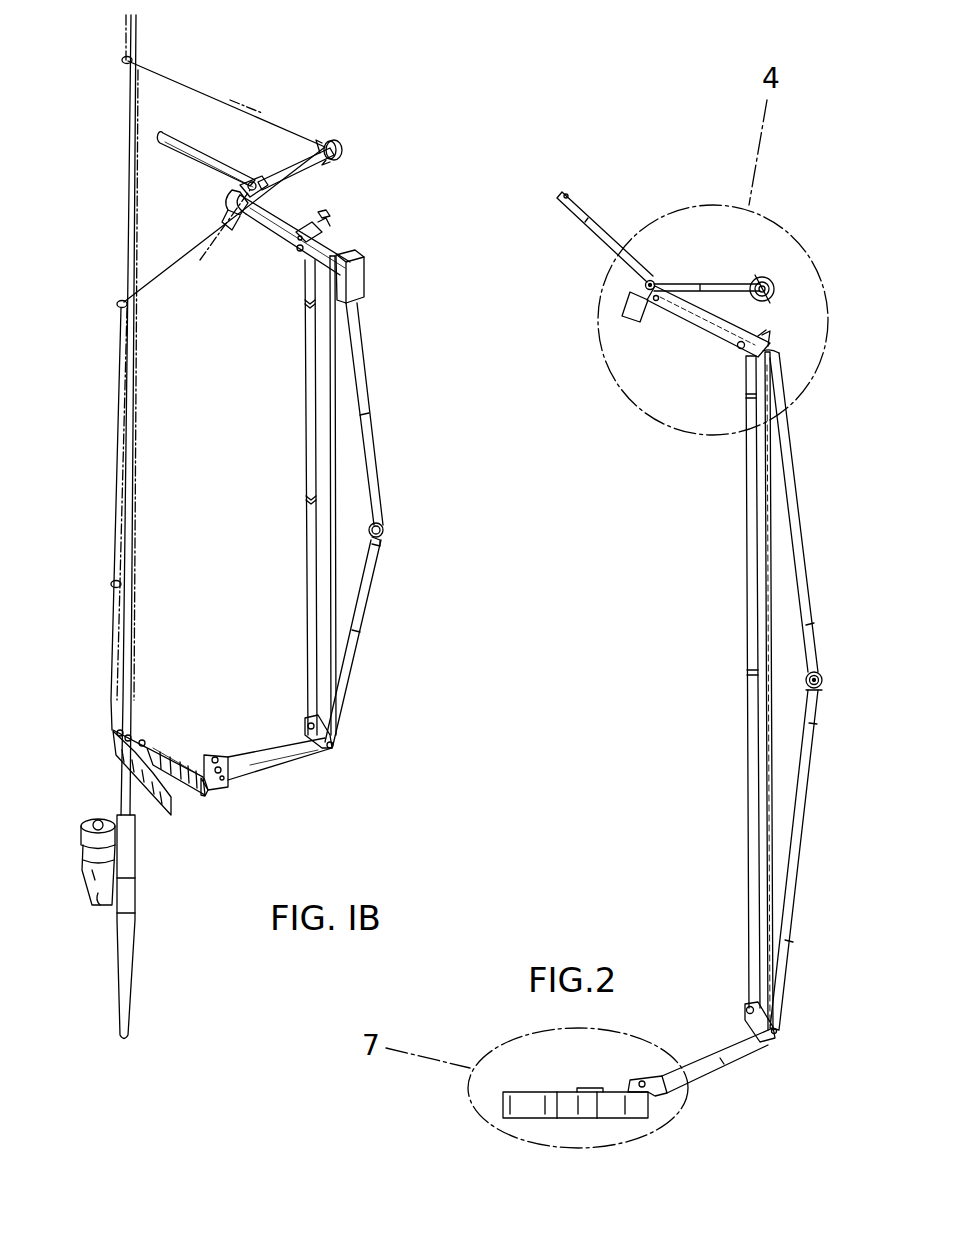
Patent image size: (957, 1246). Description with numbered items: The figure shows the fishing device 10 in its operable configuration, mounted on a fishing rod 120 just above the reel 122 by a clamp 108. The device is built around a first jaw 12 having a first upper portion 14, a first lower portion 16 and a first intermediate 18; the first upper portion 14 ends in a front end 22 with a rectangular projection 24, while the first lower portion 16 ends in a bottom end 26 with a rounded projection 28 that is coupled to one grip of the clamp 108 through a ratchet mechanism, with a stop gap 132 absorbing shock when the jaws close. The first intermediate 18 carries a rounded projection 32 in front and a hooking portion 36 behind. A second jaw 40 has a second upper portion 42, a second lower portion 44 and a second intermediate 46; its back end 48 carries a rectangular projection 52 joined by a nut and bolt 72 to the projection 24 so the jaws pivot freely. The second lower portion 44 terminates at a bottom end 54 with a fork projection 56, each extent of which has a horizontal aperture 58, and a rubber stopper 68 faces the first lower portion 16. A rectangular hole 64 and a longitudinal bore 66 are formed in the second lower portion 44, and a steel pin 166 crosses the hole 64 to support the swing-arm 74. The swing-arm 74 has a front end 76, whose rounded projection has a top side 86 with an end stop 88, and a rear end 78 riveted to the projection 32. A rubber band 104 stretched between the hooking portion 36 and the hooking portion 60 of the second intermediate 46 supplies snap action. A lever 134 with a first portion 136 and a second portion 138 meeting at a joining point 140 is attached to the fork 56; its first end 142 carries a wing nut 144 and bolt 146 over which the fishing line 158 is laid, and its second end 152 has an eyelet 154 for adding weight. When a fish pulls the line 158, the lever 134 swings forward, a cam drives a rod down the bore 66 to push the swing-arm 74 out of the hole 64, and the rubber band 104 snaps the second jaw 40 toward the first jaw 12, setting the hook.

In FIG. 1B, the fishing device 10 is at (382, 112).
In FIG. 2, the fishing device 10 is at (712, 533).
In FIG. 1B, the first jaw 12 is at (338, 762).
In FIG. 2, the first jaw 12 is at (750, 1068).
In FIG. 1B, the first upper portion 14 is at (355, 640).
In FIG. 2, the first upper portion 14 is at (810, 838).
In FIG. 1B, the first lower portion 16 is at (262, 758).
In FIG. 2, the first lower portion 16 is at (700, 1075).
In FIG. 2, the first intermediate 18 is at (782, 1036).
In FIG. 2, the front end 22 is at (820, 694).
In FIG. 1B, the rectangular projection 24 is at (380, 542).
In FIG. 1B, the bottom end 26 is at (225, 782).
In FIG. 1B, the rounded projection 28 is at (200, 760).
In FIG. 2, the rounded projection 28 is at (665, 1116).
In FIG. 1B, the rounded projection 32 is at (305, 722).
In FIG. 2, the rounded projection 32 is at (745, 1016).
In FIG. 1B, the hooking portion 36 is at (338, 746).
In FIG. 1B, the second jaw 40 is at (385, 270).
In FIG. 1B, the second upper portion 42 is at (370, 405).
In FIG. 2, the second upper portion 42 is at (803, 500).
In FIG. 1B, the second lower portion 44 is at (285, 232).
In FIG. 1B, the second intermediate 46 is at (330, 296).
In FIG. 1B, the back end 48 is at (378, 525).
In FIG. 2, the back end 48 is at (818, 666).
In FIG. 1B, the rectangular projection 52 is at (383, 530).
In FIG. 1B, the bottom end 54 is at (240, 196).
In FIG. 2, the bottom end 54 is at (657, 305).
In FIG. 1B, the fork projection 56 is at (280, 196).
In FIG. 2, the fork projection 56 is at (651, 281).
In FIG. 2, the horizontal aperture 58 is at (645, 286).
In FIG. 1B, the hooking portion 60 is at (364, 262).
In FIG. 1B, the rectangular hole 64 is at (322, 230).
In FIG. 2, the longitudinal bore 66 is at (712, 325).
In FIG. 1B, the stopper 68 is at (230, 216).
In FIG. 2, the nut and bolt 72 is at (823, 680).
In FIG. 1B, the swing-arm 74 is at (305, 522).
In FIG. 2, the swing-arm 74 is at (745, 686).
In FIG. 1B, the front end 76 is at (305, 292).
In FIG. 2, the front end 76 is at (755, 395).
In FIG. 1B, the rear end 78 is at (308, 715).
In FIG. 2, the rear end 78 is at (748, 1000).
In FIG. 1B, the top side 86 is at (325, 288).
In FIG. 1B, the end stop 88 is at (340, 230).
In FIG. 2, the rubber band 104 is at (768, 788).
In FIG. 1B, the clamp 108 is at (148, 805).
In FIG. 1B, the fishing rod 120 is at (117, 797).
In FIG. 1B, the reel 122 is at (115, 913).
In FIG. 1B, the stop gap 132 is at (205, 790).
In FIG. 1B, the lever 134 is at (250, 183).
In FIG. 2, the first portion 136 is at (700, 285).
In FIG. 2, the second portion 138 is at (592, 238).
In FIG. 1B, the joining point 140 is at (250, 184).
In FIG. 2, the first end 142 is at (774, 280).
In FIG. 2, the wing nut 144 is at (785, 296).
In FIG. 1B, the bolt 146 is at (345, 142).
In FIG. 1B, the second end 152 is at (160, 145).
In FIG. 2, the eyelet 154 is at (567, 195).
In FIG. 1B, the fishing line 158 is at (130, 300).
In FIG. 2, the steel pin 166 is at (747, 384).